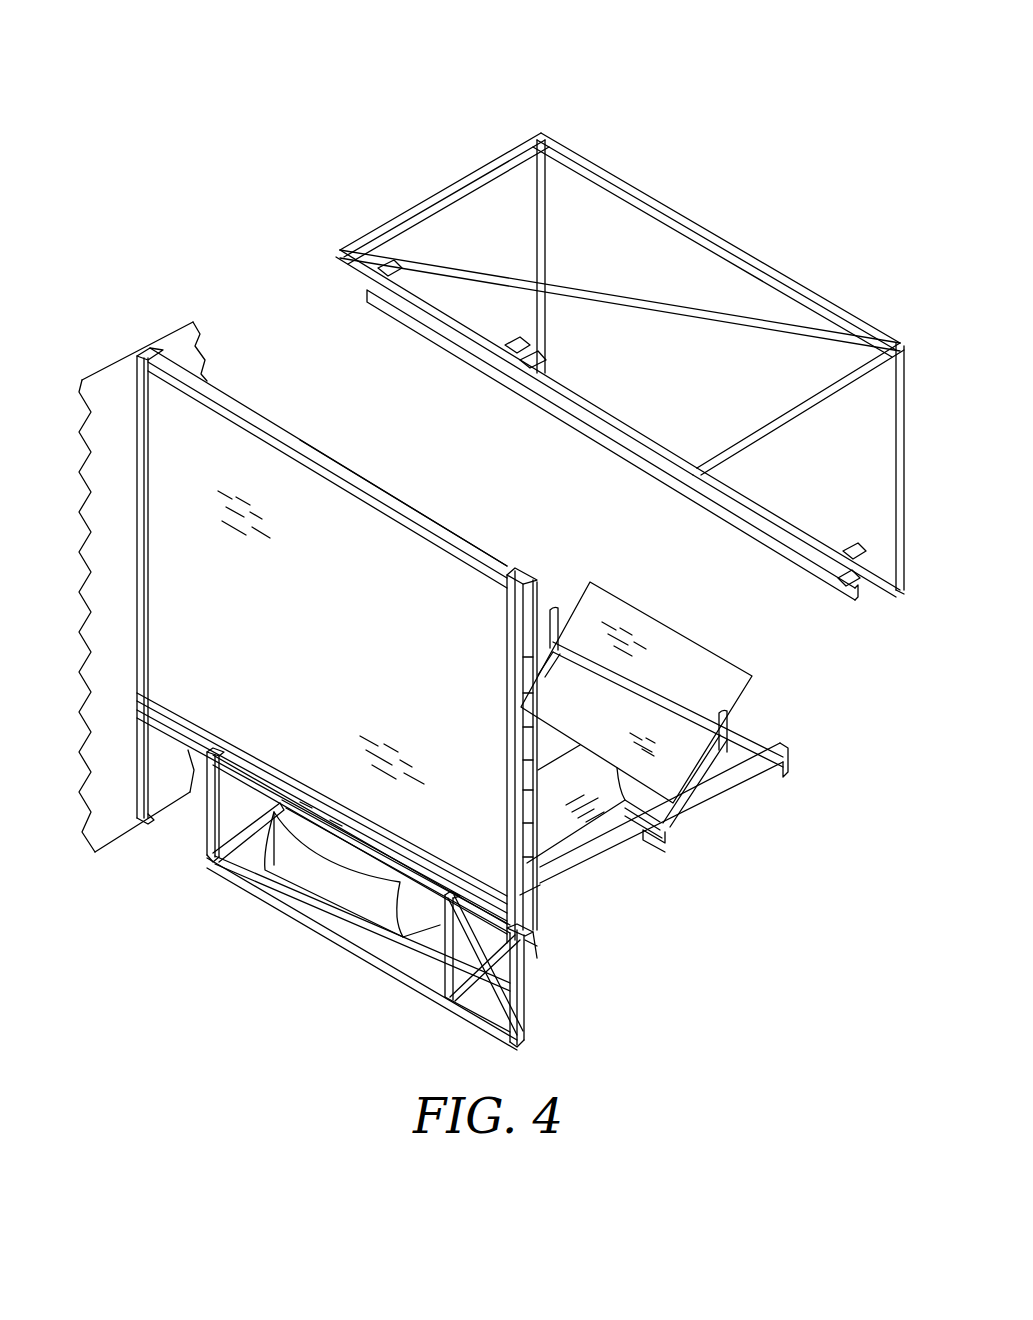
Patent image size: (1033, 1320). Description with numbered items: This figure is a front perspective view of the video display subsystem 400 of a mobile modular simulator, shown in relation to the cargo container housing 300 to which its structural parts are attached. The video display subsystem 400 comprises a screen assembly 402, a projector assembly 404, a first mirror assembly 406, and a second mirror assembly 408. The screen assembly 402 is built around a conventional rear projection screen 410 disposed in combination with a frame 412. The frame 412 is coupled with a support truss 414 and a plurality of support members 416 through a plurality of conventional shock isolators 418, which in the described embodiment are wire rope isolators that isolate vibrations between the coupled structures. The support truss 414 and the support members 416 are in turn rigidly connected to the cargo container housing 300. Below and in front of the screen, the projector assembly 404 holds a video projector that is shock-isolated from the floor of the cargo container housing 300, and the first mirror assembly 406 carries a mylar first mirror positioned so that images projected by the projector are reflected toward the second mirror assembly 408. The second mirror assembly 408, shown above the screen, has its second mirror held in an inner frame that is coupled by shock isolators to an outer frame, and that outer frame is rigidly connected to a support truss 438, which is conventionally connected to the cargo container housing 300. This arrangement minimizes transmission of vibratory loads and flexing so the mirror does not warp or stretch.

The video display subsystem 400 is at (195, 114).
The cargo container housing 300 is at (108, 400).
The screen assembly 402 is at (258, 418).
The projector assembly 404 is at (620, 840).
The first mirror assembly 406 is at (752, 696).
The second mirror assembly 408 is at (442, 346).
The rear projection screen 410 is at (298, 639).
The frame 412 is at (430, 524).
The support truss 414 is at (205, 822).
The support members 416 is at (535, 902).
The shock isolators 418 is at (285, 787).
The support truss 438 is at (630, 163).